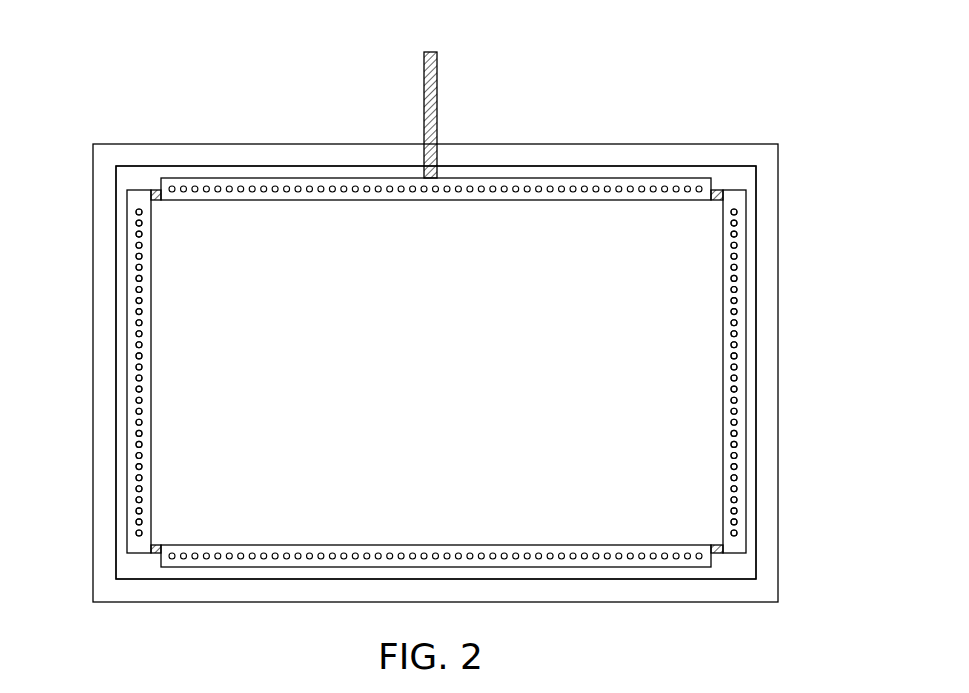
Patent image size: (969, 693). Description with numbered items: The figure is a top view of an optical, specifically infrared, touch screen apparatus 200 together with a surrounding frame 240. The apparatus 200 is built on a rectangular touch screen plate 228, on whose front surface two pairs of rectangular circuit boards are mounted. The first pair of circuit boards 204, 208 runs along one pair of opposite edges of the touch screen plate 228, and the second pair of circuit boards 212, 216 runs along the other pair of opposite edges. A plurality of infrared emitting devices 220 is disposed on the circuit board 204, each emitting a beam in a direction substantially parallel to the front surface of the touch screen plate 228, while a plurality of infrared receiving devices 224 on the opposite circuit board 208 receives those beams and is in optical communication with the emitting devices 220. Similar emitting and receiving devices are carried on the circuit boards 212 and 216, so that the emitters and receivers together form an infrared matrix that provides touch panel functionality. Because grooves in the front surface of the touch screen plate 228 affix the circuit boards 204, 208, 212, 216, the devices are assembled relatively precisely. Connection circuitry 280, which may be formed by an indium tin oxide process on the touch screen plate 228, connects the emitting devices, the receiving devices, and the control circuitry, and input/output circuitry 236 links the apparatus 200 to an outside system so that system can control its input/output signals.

The optical touch screen apparatus 200 is at (758, 485).
The circuit board 204 is at (127, 327).
The circuit board 208 is at (746, 305).
The circuit board 212 is at (594, 178).
The circuit board 216 is at (697, 567).
The infrared emitting devices 220 is at (136, 235).
The infrared receiving devices 224 is at (737, 234).
The touch screen plate 228 is at (725, 165).
The input/output circuitry 236 is at (437, 110).
The frame 240 is at (780, 412).
The connection circuitry 280 is at (156, 190).